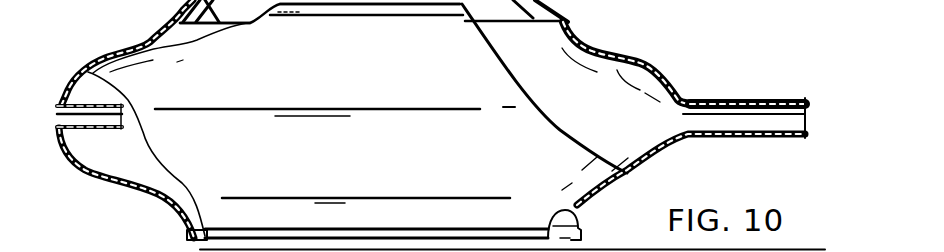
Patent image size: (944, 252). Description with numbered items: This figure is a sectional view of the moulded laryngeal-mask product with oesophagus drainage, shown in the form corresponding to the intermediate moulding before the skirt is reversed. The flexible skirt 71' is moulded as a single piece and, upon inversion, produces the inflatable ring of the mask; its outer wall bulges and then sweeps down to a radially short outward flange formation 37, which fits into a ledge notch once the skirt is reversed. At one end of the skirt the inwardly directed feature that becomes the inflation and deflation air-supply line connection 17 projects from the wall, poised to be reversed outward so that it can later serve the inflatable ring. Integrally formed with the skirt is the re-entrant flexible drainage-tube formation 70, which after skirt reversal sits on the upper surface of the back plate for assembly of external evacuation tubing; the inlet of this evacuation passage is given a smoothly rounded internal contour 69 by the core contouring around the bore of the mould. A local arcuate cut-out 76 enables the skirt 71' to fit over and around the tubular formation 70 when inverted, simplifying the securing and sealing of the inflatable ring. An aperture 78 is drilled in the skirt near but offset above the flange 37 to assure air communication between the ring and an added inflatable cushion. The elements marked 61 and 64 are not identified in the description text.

The air-supply line connection 17 is at (99, 135).
The outward flange formation 37 is at (200, 245).
The housing upper wall 61 is at (363, 12).
The coupling block 64 is at (297, 0).
The smoothly rounded internal contour 69 is at (677, 128).
The drainage-tube formation 70 is at (737, 98).
The skirt 71' is at (637, 63).
The arcuate cut-out 76 is at (572, 221).
The aperture 78 is at (452, 194).